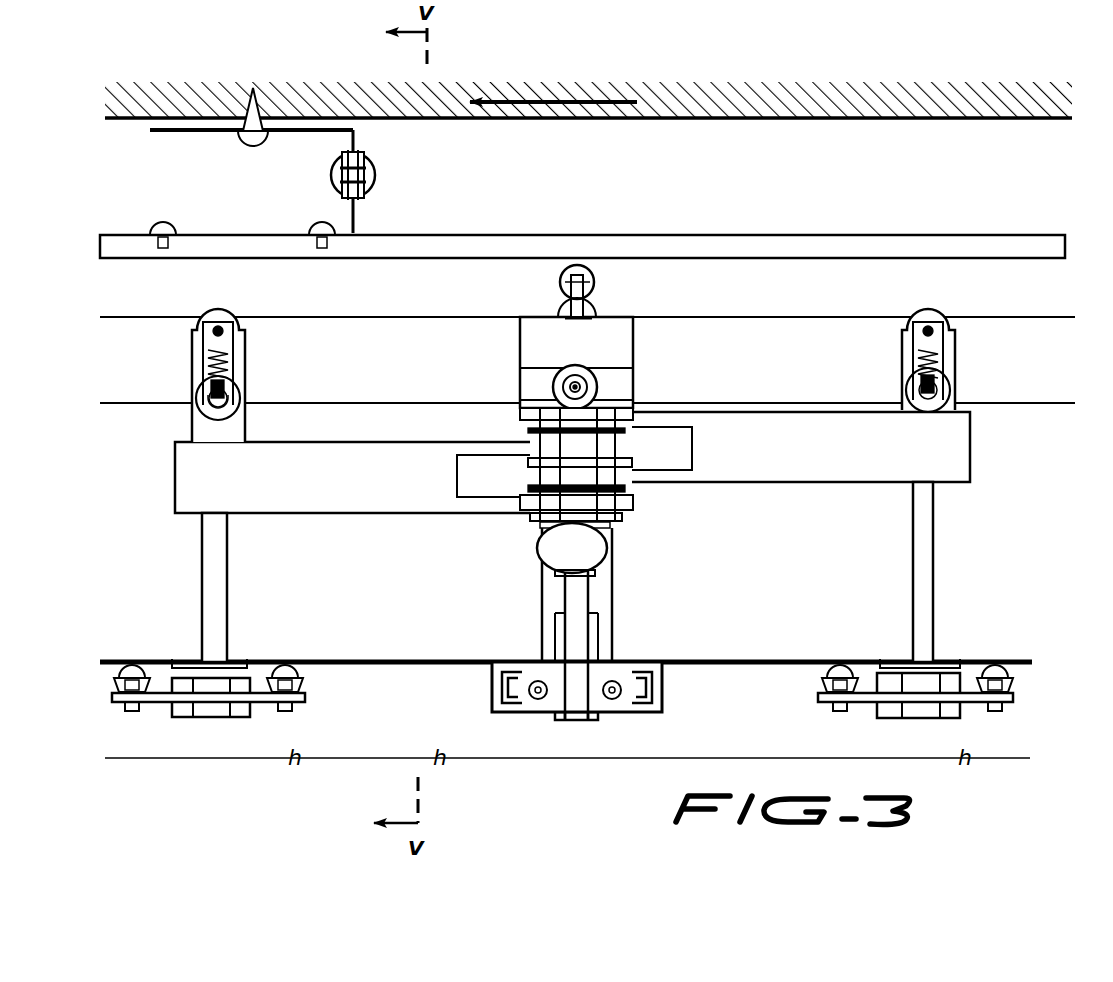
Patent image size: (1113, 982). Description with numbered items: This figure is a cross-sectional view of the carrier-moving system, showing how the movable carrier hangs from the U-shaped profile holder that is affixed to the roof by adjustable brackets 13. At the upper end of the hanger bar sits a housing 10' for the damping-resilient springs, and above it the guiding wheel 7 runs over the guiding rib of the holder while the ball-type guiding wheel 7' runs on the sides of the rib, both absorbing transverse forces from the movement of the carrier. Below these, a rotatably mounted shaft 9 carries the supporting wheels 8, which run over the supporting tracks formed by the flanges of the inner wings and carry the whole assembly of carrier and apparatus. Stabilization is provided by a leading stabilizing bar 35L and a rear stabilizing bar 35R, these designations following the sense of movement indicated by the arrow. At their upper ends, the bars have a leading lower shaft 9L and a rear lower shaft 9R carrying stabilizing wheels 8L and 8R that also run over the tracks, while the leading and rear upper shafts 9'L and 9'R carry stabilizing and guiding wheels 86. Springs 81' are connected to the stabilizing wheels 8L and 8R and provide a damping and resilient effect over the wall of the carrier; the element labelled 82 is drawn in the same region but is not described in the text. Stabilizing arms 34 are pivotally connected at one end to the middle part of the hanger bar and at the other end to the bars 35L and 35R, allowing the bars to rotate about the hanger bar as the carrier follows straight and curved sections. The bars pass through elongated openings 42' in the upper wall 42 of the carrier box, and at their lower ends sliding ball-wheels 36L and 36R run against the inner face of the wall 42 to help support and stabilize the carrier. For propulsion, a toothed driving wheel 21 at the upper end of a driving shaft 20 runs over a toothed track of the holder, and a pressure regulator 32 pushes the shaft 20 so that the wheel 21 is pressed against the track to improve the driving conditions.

The adjustable bracket 13 is at (384, 181).
The guiding wheel 7' is at (607, 291).
The housing 10' is at (542, 362).
The guiding wheel 7 is at (621, 340).
The shaft 9 is at (519, 381).
The supporting wheel 8 is at (600, 387).
The leading upper shaft 9'L is at (199, 303).
The stabilizing and guiding wheel 86 is at (248, 307).
The spring 81' is at (613, 363).
The plunger 82 is at (236, 375).
The leading lower shaft 9L is at (206, 395).
The leading stabilizing wheel 8L is at (246, 410).
The rear upper shaft 9'R is at (976, 306).
The rear lower shaft 9R is at (946, 385).
The rear stabilizing wheel 8R is at (906, 394).
The stabilizing arm 34 is at (367, 496).
The leading stabilizing bar 35L is at (215, 597).
The rear stabilizing bar 35R is at (922, 555).
The sliding ball-wheel 36L is at (152, 681).
The sliding ball-wheel 36R is at (1012, 686).
The upper wall 42 is at (566, 631).
The elongated opening 42' is at (566, 637).
The driving wheel 21 is at (569, 550).
The driving shaft 20 is at (574, 638).
The pressure regulator 32 is at (596, 691).